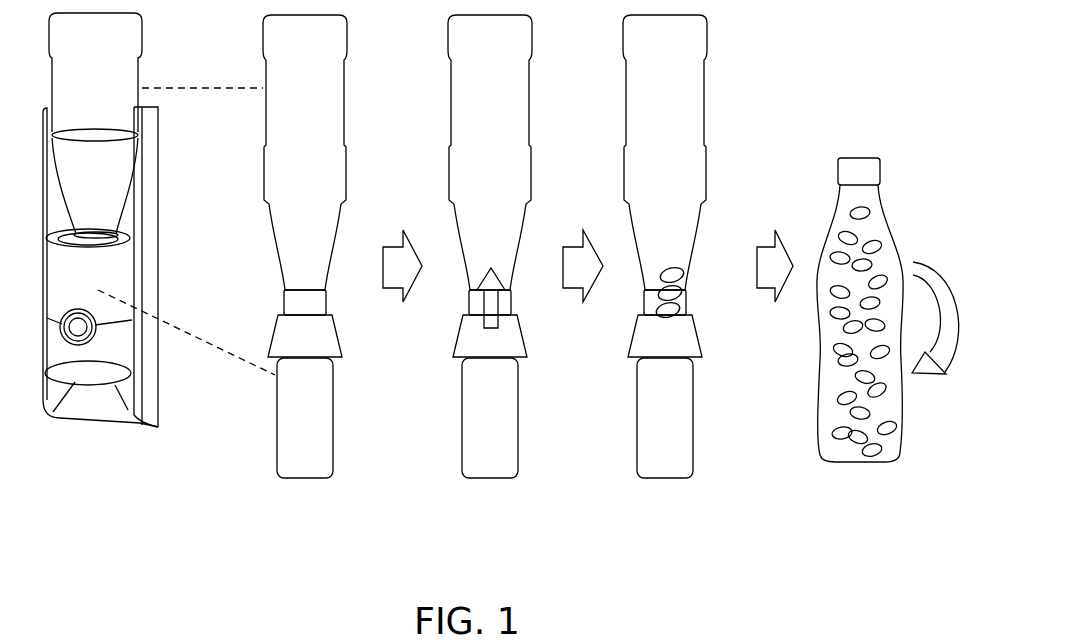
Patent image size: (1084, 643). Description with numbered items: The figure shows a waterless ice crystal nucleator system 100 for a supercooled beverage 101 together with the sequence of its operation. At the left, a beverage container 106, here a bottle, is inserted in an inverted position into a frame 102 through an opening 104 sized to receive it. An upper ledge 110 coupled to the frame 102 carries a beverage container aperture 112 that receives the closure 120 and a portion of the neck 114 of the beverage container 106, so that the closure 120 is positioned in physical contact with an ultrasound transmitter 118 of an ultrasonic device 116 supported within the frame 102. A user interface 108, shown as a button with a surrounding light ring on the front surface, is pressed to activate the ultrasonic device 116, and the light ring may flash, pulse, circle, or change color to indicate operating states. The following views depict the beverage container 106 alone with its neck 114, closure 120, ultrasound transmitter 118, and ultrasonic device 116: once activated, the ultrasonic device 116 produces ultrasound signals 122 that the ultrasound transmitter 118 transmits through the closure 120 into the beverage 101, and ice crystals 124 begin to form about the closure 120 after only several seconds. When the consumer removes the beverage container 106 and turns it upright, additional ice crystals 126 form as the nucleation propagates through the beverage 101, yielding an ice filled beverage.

The waterless ice crystal nucleator system 100 is at (131, 249).
The beverage 101 is at (131, 125).
The frame 102 is at (131, 269).
The opening 104 is at (150, 110).
The beverage container 106 is at (142, 28).
The user interface 108 is at (92, 328).
The upper ledge 110 is at (112, 243).
The beverage container aperture 112 is at (120, 234).
The neck 114 is at (295, 276).
The ultrasonic device 116 is at (335, 422).
The ultrasound transmitter 118 is at (338, 337).
The closure 120 is at (327, 302).
The ultrasound signals 122 is at (497, 303).
The ice crystals 124 is at (682, 290).
The additional ice crystals 126 is at (847, 397).